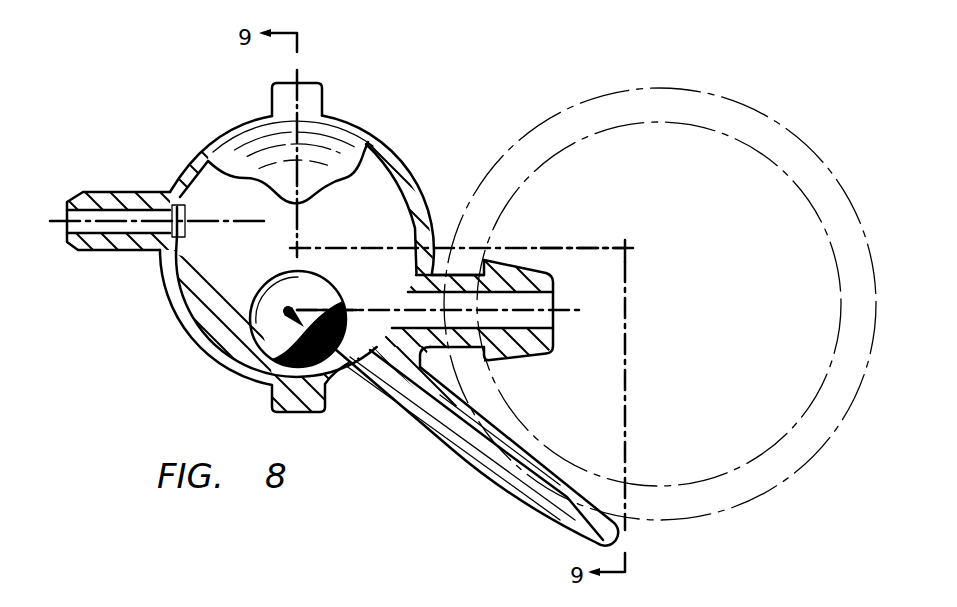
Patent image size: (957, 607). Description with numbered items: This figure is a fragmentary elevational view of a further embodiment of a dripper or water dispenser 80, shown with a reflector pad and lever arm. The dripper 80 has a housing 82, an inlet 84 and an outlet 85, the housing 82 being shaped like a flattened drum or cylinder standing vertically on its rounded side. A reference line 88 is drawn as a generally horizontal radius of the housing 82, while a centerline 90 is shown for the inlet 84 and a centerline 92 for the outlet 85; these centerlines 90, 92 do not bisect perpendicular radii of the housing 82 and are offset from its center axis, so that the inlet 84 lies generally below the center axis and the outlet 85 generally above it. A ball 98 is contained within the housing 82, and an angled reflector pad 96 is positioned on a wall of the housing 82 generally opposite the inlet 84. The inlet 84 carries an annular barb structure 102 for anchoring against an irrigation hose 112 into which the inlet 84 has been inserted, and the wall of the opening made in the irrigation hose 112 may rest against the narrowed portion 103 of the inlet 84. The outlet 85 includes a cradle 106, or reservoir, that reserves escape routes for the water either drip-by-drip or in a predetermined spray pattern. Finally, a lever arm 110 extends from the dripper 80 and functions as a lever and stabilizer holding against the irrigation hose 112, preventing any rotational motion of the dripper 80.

The dripper 80 is at (400, 111).
The housing 82 is at (337, 113).
The inlet 84 is at (548, 246).
The outlet 85 is at (103, 190).
The reference line 88 is at (352, 247).
The centerline 90 is at (367, 309).
The centerline 92 is at (228, 228).
The angled reflector pad 96 is at (208, 300).
The ball 98 is at (277, 281).
The annular barb structure 102 is at (503, 367).
The narrowed portion 103 is at (443, 256).
The cradle 106 is at (204, 213).
The lever arm 110 is at (452, 460).
The irrigation hose 112 is at (797, 470).